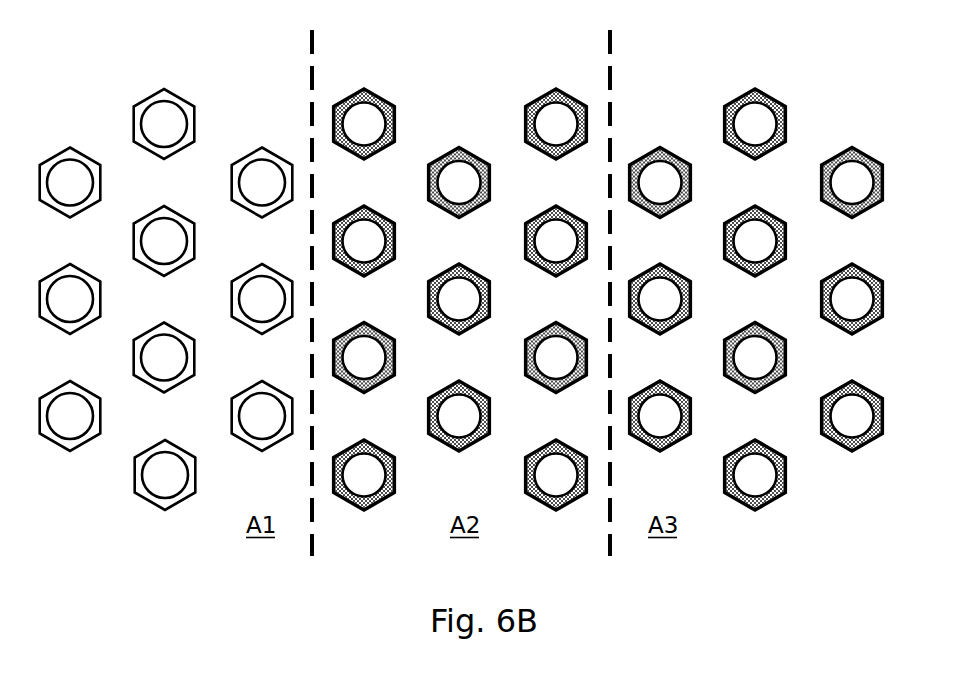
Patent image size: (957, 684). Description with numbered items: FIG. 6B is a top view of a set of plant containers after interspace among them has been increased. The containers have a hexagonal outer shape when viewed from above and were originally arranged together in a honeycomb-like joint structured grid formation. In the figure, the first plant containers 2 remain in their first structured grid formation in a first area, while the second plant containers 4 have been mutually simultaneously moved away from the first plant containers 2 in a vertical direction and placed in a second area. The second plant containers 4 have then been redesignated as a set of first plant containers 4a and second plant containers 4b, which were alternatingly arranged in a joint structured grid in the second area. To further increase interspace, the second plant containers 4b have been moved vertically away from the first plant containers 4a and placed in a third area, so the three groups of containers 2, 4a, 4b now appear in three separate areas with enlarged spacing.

The first plant containers 2 is at (174, 125).
The second plant containers 4 is at (413, 124).
The first plant containers of the second plant containers 4a is at (375, 127).
The second plant containers of the second plant containers 4b is at (767, 127).